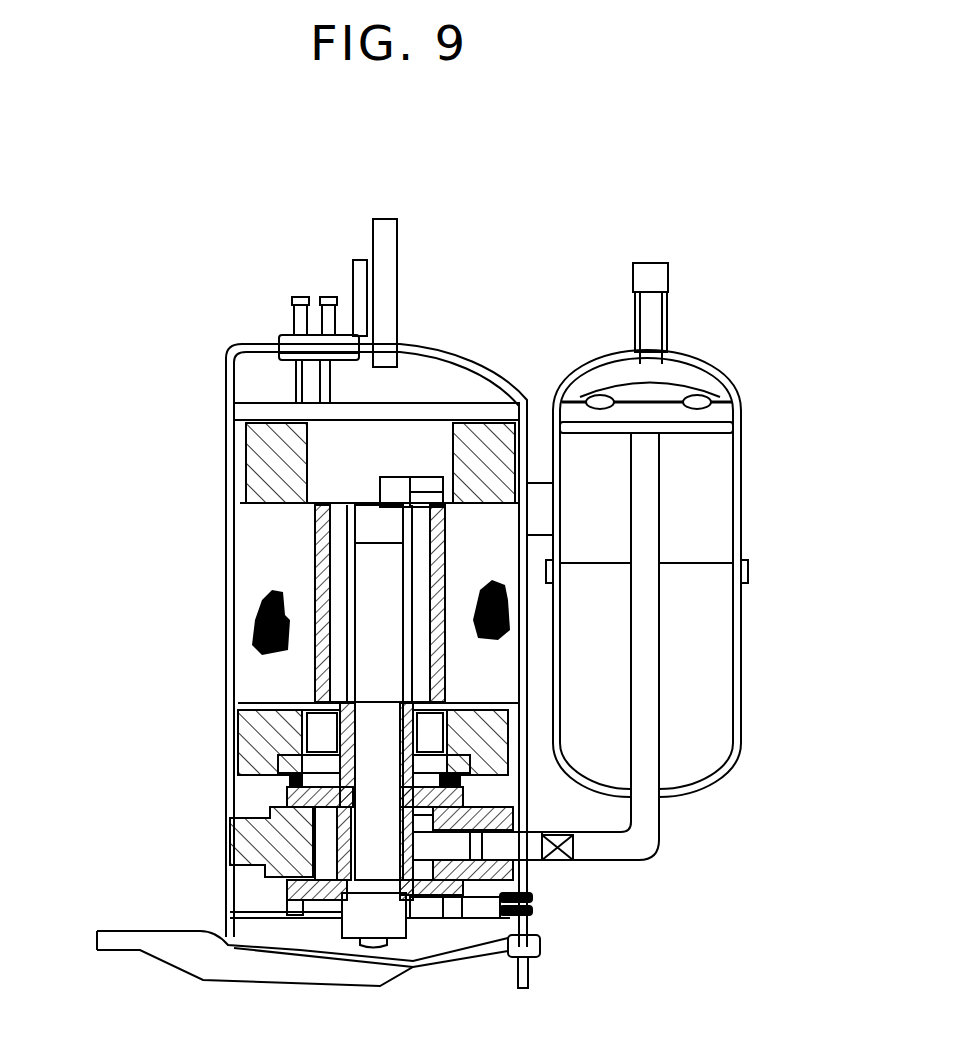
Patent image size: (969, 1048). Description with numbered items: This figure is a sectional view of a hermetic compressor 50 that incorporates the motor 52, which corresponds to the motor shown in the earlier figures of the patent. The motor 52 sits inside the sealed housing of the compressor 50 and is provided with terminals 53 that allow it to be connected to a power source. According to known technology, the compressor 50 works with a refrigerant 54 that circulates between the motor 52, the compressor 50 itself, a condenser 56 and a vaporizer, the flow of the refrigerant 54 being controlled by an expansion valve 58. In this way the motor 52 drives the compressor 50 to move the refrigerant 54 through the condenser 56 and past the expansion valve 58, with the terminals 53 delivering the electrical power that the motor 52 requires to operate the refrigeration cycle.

The hermetic compressor 50 is at (106, 294).
The motor 52 is at (227, 833).
The terminals 53 is at (532, 903).
The refrigerant 54 is at (692, 668).
The condenser 56 is at (713, 530).
The expansion valve 58 is at (570, 860).